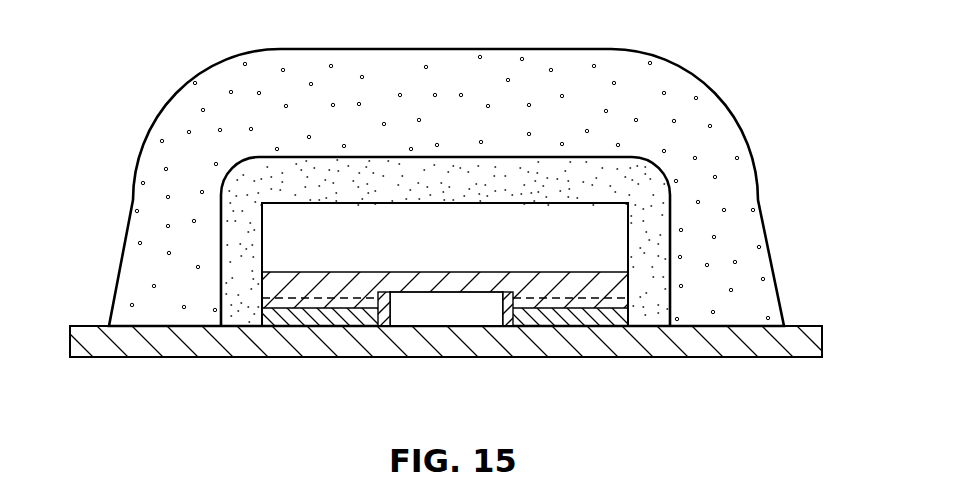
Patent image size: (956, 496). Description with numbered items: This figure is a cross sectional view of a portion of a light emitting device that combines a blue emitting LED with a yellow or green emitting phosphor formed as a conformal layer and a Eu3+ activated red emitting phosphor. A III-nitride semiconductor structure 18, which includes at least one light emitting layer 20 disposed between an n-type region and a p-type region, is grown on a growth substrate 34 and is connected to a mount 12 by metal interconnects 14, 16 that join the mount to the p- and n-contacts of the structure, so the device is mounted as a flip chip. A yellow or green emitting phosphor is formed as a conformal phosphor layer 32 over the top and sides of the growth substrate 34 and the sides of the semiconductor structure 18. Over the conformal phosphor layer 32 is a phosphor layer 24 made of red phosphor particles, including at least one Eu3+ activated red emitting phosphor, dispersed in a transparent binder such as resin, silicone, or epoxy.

The mount 12 is at (422, 341).
The metal interconnect 14 is at (528, 315).
The metal interconnect 16 is at (462, 313).
The III-nitride semiconductor structure 18 is at (607, 283).
The light emitting layer 20 is at (565, 300).
The phosphor layer 24 is at (641, 44).
The conformal phosphor layer 32 is at (656, 190).
The growth substrate 34 is at (457, 250).